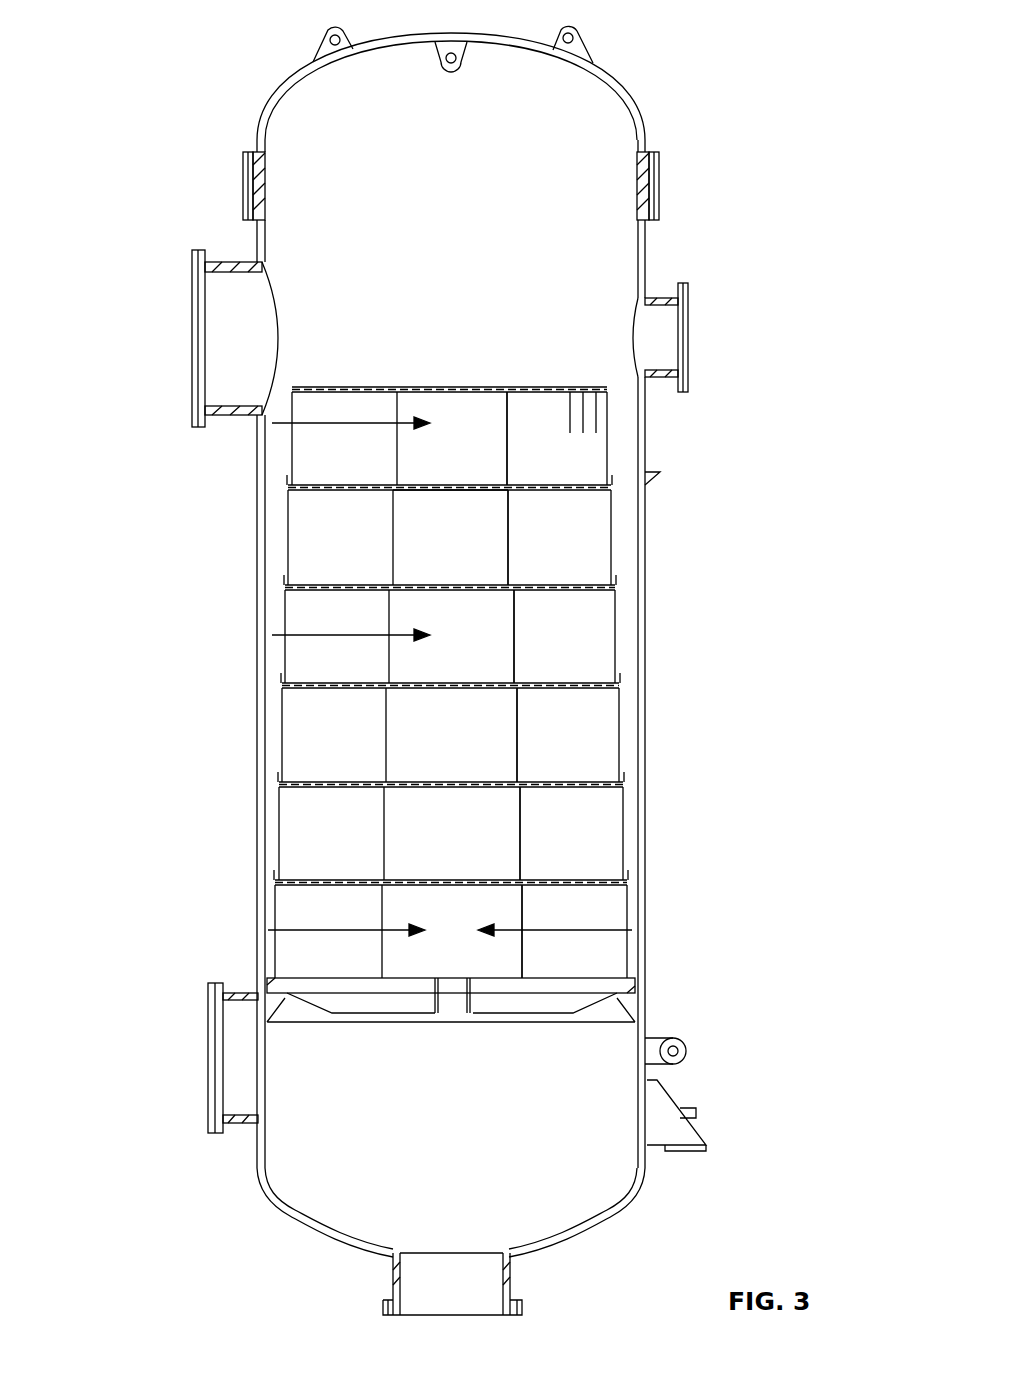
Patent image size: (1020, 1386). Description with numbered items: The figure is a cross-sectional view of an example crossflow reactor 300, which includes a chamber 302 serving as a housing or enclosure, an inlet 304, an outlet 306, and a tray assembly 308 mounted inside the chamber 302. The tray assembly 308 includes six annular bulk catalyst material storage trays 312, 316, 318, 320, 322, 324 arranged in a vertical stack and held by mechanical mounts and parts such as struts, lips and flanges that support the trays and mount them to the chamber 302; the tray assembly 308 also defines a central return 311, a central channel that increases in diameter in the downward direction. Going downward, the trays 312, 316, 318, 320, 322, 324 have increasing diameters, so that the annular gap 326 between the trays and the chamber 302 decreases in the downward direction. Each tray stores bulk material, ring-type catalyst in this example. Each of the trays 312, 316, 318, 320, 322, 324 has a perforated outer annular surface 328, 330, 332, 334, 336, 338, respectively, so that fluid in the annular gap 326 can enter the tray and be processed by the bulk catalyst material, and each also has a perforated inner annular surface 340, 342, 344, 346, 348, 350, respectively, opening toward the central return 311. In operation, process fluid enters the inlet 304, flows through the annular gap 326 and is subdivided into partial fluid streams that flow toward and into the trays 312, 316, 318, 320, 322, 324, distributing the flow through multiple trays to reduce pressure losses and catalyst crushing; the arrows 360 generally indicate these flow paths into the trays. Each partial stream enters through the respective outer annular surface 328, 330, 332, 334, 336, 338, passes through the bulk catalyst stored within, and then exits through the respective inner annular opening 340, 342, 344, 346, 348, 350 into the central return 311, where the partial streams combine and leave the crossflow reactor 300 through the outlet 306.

The crossflow reactor 300 is at (178, 48).
The chamber 302 is at (607, 73).
The inlet 304 is at (190, 325).
The outlet 306 is at (206, 1055).
The tray assembly 308 is at (329, 380).
The central return 311 is at (450, 532).
The storage tray 312 is at (580, 453).
The storage tray 316 is at (560, 558).
The storage tray 318 is at (560, 650).
The storage tray 320 is at (560, 752).
The storage tray 322 is at (560, 852).
The storage tray 324 is at (605, 952).
The annular gap 326 is at (278, 500).
The perforated outer annular surface 328 is at (270, 405).
The perforated outer annular surface 330 is at (278, 540).
The perforated outer annular surface 332 is at (278, 645).
The perforated outer annular surface 334 is at (278, 738).
The perforated outer annular surface 336 is at (278, 835).
The perforated outer annular surface 338 is at (272, 918).
The inner annular surface 340 is at (510, 430).
The inner annular surface 342 is at (510, 530).
The inner annular surface 344 is at (512, 628).
The inner annular surface 346 is at (520, 725).
The inner annular surface 348 is at (520, 822).
The inner annular surface 350 is at (520, 915).
The arrows 360 is at (352, 423).